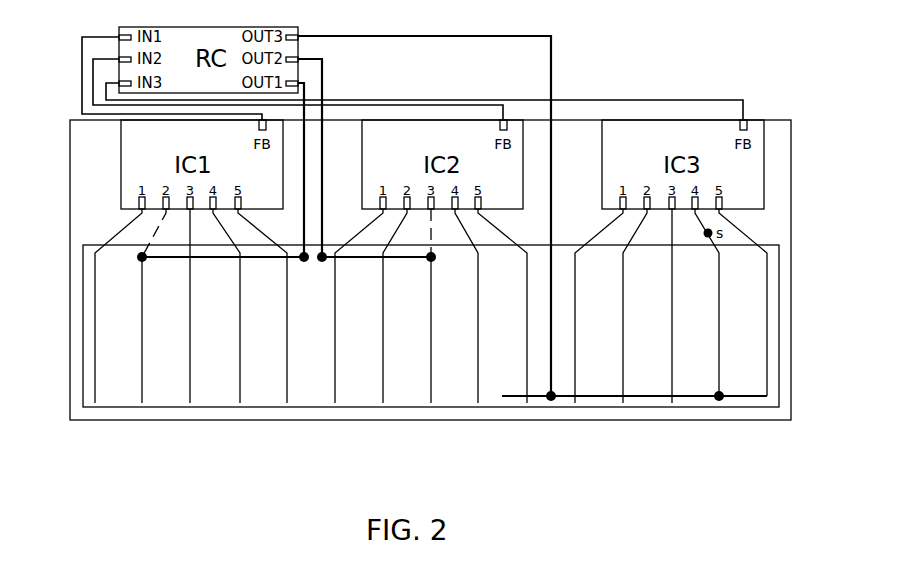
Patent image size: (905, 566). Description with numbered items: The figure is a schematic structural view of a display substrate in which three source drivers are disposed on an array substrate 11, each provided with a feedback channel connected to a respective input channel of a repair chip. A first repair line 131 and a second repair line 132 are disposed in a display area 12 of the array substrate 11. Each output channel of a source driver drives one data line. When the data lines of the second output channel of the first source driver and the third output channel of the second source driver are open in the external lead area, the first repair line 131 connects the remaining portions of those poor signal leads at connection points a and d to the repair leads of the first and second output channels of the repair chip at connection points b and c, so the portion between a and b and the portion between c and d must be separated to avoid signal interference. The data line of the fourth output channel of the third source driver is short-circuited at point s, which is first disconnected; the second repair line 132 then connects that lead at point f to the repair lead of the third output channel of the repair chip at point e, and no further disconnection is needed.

The array substrate 11 is at (791, 203).
The display area 12 is at (779, 355).
The repair line 131 is at (171, 260).
The repair line 132 is at (745, 398).